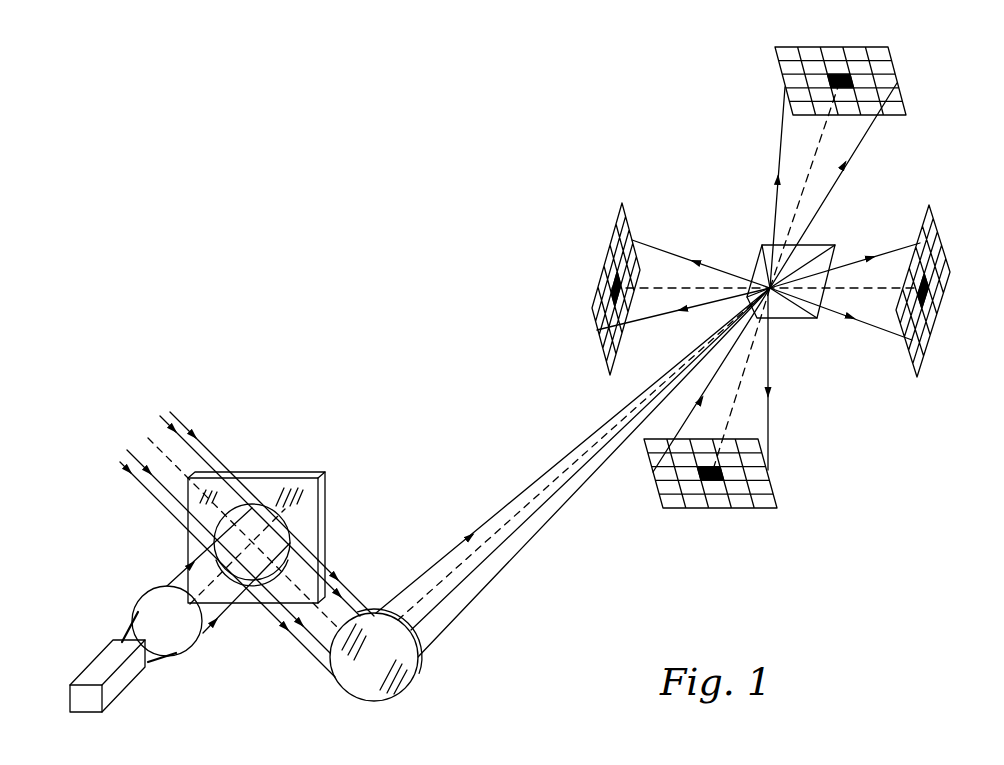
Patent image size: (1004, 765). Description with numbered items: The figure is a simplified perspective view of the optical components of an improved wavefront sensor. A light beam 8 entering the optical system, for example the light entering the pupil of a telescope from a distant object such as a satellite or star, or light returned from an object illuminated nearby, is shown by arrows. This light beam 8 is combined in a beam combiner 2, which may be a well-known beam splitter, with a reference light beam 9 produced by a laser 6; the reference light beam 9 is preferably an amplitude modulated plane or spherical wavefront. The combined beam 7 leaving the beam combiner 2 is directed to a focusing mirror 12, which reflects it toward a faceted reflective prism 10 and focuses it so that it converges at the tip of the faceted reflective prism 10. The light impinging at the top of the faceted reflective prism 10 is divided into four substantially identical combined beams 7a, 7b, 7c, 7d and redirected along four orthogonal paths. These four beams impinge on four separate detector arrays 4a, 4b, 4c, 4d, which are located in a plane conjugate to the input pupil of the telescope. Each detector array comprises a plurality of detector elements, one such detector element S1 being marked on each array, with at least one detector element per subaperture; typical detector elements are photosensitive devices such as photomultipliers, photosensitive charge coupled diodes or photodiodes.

The beam combiner 2 is at (326, 503).
The detector array 4a is at (931, 343).
The detector array 4b is at (907, 95).
The detector array 4c is at (623, 204).
The detector array 4d is at (777, 501).
The laser 6 is at (113, 700).
The combined beam 7 is at (348, 590).
The combined beam 7a is at (860, 258).
The combined beam 7b is at (781, 146).
The combined beam 7c is at (668, 251).
The combined beam 7d is at (768, 438).
The light beam 8 is at (170, 507).
The reference light beam 9 is at (168, 574).
The faceted reflective prism 10 is at (787, 322).
The focusing mirror 12 is at (333, 686).
The detector element S1 is at (852, 81).